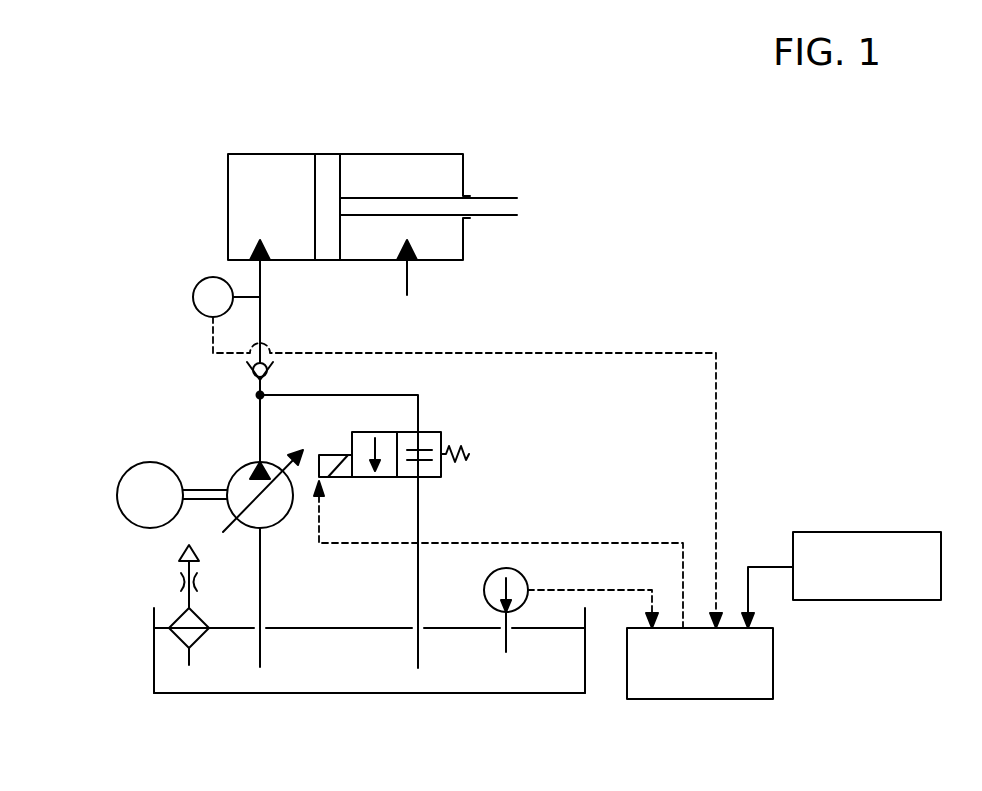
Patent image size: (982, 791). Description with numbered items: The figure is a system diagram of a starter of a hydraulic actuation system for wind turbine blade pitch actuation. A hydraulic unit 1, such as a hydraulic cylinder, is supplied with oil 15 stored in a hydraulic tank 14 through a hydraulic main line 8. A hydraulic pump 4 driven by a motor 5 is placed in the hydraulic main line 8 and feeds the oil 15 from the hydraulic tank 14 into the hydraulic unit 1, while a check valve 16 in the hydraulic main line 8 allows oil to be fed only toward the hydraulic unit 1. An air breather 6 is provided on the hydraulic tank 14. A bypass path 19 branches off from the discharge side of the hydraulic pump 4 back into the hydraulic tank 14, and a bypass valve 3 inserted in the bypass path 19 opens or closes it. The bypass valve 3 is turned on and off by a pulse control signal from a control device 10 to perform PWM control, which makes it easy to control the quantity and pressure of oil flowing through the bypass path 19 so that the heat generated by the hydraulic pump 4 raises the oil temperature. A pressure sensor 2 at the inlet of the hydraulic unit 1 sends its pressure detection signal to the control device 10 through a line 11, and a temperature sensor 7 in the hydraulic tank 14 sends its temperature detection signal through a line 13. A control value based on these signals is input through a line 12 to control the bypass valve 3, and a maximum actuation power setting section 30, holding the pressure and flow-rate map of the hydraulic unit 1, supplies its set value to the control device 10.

The hydraulic unit 1 is at (299, 154).
The pressure sensor 2 is at (193, 297).
The bypass valve 3 is at (430, 432).
The hydraulic pump 4 is at (237, 465).
The motor 5 is at (117, 476).
The air breather 6 is at (180, 582).
The temperature sensor 7 is at (508, 568).
The hydraulic main line 8 is at (262, 562).
The control device 10 is at (773, 672).
The line 11 is at (667, 353).
The line 12 is at (668, 543).
The line 13 is at (580, 590).
The hydraulic tank 14 is at (154, 670).
The oil 15 is at (372, 694).
The check valve 16 is at (275, 372).
The bypass path 19 is at (420, 500).
The maximum actuation power setting section 30 is at (866, 532).